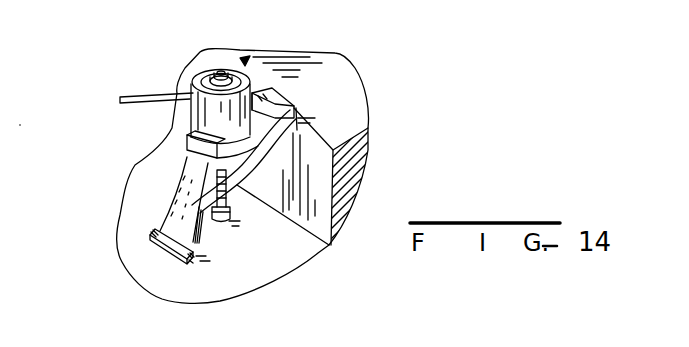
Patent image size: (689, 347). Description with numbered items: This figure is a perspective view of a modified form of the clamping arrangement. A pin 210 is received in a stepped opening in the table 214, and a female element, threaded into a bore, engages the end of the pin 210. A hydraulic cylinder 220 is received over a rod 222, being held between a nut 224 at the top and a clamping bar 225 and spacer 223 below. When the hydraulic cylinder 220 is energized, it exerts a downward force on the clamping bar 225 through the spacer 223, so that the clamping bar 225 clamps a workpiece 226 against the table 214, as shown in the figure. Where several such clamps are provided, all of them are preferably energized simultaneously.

The pin 210 is at (221, 225).
The table 214 is at (130, 238).
The hydraulic cylinder 220 is at (245, 61).
The rod 222 is at (228, 194).
The spacer 223 is at (190, 162).
The nut 224 is at (216, 72).
The clamping bar 225 is at (280, 97).
The workpiece 226 is at (283, 201).